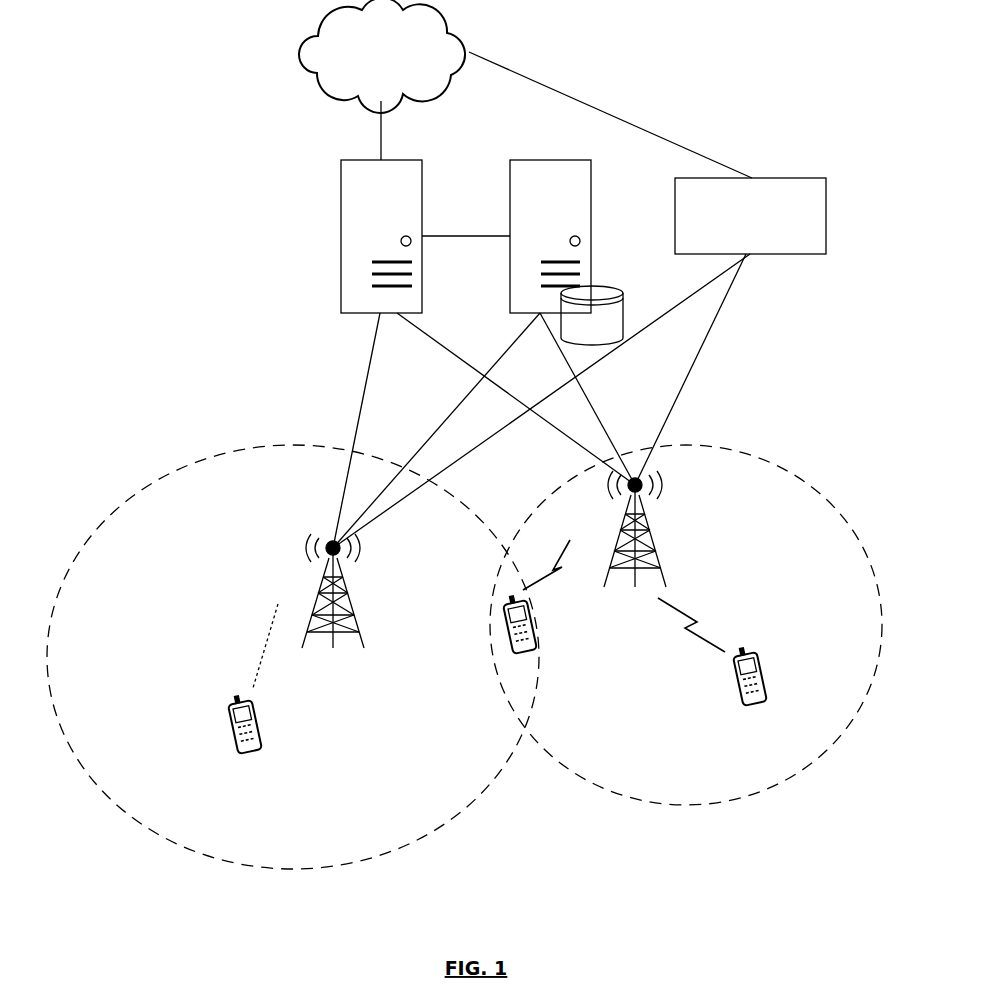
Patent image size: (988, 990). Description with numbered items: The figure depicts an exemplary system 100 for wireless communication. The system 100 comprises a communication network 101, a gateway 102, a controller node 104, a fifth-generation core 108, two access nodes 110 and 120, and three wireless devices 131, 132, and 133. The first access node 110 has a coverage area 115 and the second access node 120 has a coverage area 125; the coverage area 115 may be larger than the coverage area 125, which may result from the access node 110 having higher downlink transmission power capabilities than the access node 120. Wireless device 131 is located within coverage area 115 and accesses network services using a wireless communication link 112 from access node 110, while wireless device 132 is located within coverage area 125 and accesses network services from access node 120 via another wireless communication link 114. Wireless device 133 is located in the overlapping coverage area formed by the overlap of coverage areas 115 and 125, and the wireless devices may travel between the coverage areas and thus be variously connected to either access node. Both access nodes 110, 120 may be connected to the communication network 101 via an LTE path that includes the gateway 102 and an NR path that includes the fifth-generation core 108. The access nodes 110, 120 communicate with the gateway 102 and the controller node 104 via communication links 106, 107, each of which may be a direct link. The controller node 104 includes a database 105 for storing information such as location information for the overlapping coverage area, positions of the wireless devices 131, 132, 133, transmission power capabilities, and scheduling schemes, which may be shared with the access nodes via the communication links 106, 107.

The system 100 is at (553, 75).
The communication network 101 is at (525, 89).
The gateway 102 is at (341, 192).
The controller node 104 is at (591, 225).
The database 105 is at (623, 288).
The communication link 106 is at (443, 350).
The communication link 107 is at (410, 404).
The 5G core 108 is at (579, 363).
The access node 110 is at (280, 556).
The wireless communication link 112 is at (268, 648).
The wireless communication link 114 is at (692, 608).
The coverage area 115 is at (297, 870).
The access node 120 is at (652, 560).
The coverage area 125 is at (683, 808).
The wireless device 131 is at (243, 752).
The wireless device 132 is at (741, 704).
The wireless device 133 is at (518, 652).